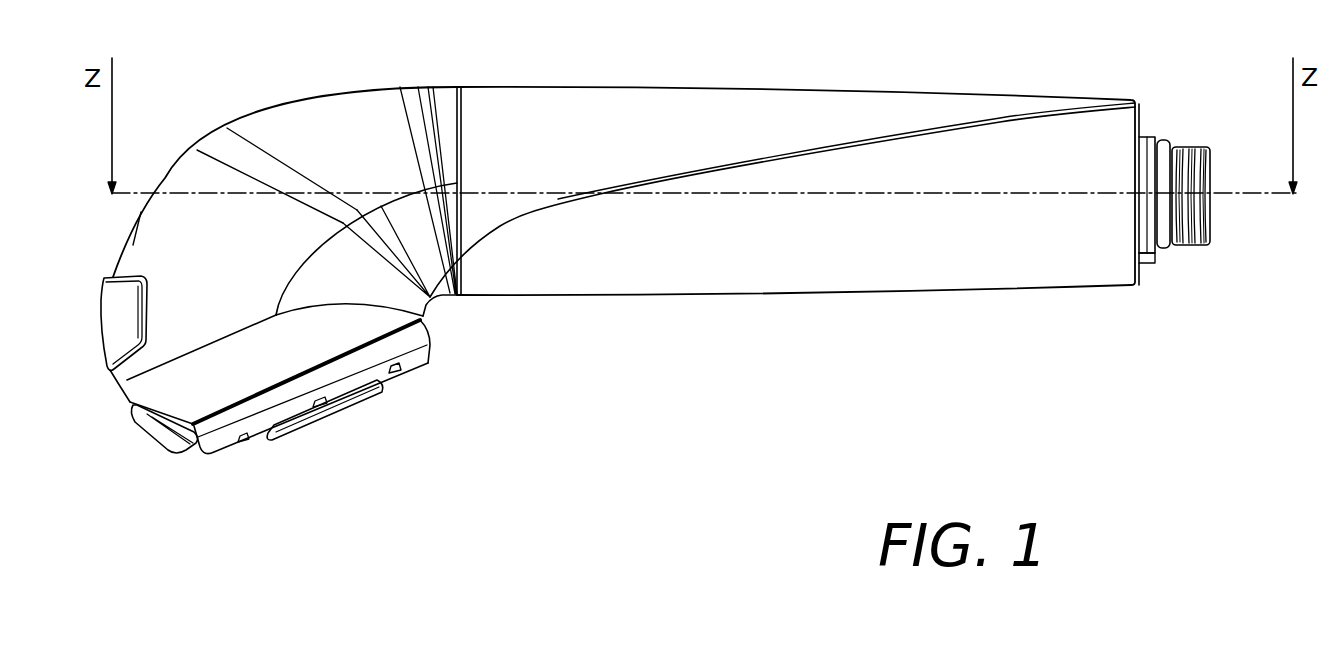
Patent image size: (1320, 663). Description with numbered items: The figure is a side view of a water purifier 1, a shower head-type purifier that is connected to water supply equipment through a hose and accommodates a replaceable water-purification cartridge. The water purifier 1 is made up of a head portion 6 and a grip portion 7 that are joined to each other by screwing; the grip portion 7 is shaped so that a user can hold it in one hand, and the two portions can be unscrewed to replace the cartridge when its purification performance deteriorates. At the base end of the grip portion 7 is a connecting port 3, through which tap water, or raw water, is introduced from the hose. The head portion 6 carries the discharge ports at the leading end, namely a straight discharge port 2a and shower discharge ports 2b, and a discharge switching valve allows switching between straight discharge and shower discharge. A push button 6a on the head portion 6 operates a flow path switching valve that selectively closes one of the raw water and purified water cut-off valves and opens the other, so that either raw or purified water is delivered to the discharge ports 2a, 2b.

The water purifier 1 is at (651, 243).
The straight discharge port 2a is at (350, 412).
The shower discharge ports 2b is at (397, 376).
The connecting port 3 is at (1212, 222).
The head portion 6 is at (217, 131).
The push button 6a is at (100, 312).
The grip portion 7 is at (660, 296).